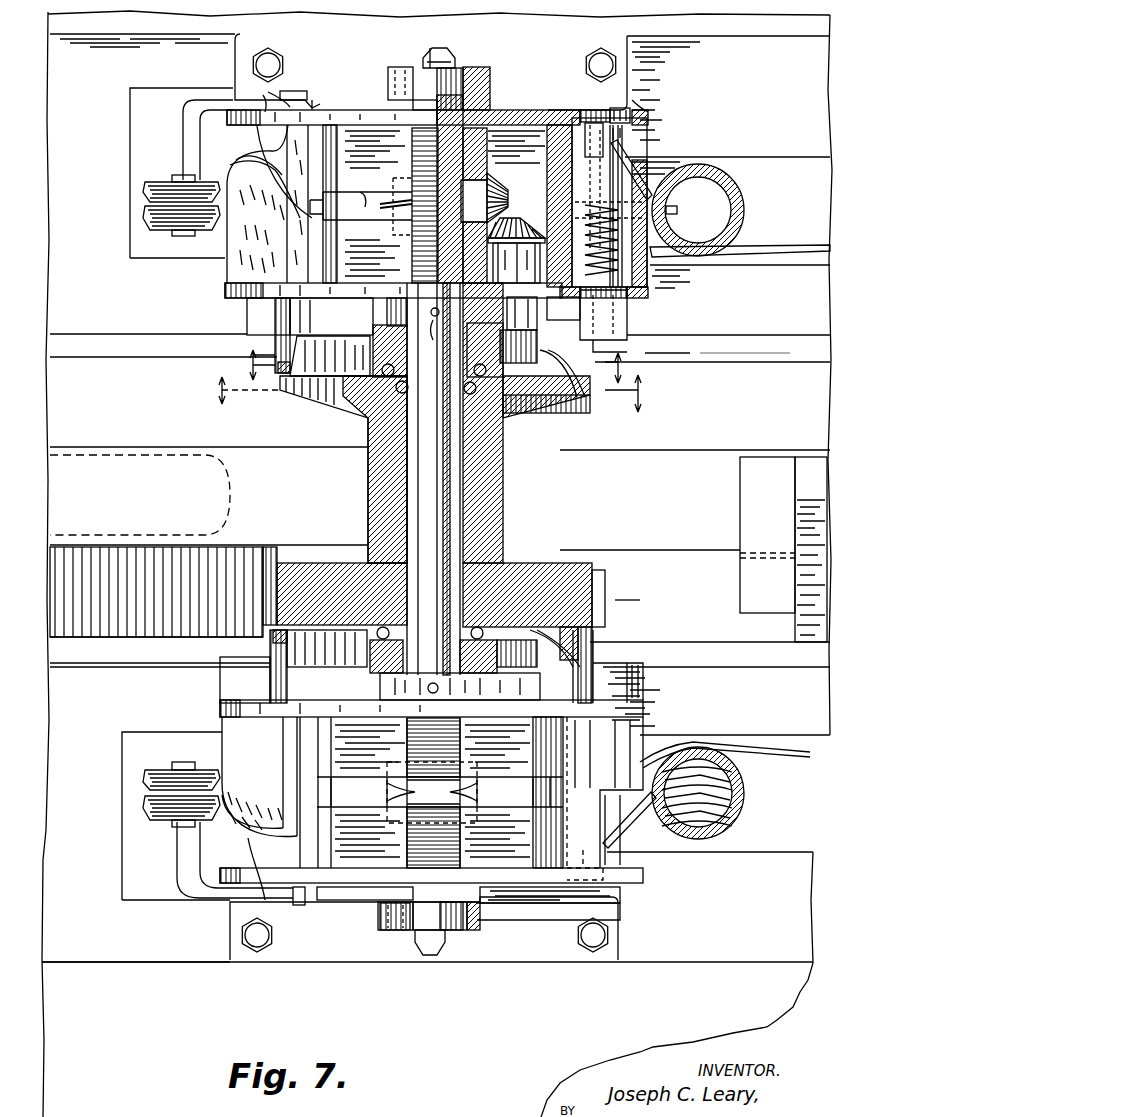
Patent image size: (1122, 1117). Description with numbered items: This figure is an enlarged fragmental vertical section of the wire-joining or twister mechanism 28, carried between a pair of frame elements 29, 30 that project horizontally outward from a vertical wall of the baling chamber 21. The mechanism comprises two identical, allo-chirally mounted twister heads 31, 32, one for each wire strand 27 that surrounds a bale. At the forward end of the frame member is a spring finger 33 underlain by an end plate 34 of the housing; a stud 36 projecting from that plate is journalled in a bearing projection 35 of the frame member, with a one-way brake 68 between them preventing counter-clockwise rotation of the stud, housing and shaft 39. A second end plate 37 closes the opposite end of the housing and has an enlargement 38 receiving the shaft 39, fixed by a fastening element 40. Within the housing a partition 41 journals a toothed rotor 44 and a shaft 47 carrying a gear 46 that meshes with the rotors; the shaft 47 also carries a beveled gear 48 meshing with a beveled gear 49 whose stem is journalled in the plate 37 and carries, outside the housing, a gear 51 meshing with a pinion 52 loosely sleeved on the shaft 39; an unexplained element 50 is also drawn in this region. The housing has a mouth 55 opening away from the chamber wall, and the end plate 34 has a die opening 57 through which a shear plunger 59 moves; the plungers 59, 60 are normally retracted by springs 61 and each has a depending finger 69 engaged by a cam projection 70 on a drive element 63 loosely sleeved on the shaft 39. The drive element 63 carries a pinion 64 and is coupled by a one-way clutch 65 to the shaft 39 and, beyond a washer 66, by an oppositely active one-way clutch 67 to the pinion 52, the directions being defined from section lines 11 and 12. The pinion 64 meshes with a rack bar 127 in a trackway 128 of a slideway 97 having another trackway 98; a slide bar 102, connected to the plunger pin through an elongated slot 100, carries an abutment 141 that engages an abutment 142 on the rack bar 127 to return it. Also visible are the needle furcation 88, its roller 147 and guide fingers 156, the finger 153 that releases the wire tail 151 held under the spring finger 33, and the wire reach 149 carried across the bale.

The section line 11 is at (437, 366).
The section line 12 is at (432, 393).
The baling chamber 21 is at (718, 42).
The wire strand 27 is at (672, 206).
The wire-joining mechanism 28 is at (122, 985).
The frame element 29 is at (356, 110).
The frame element 30 is at (538, 910).
The twister head 31 is at (203, 294).
The twister head 32 is at (203, 704).
The spring finger 33 is at (293, 92).
The end plate 34 is at (532, 112).
The bearing projection 35 is at (488, 96).
The stud 36 is at (452, 78).
The second end plate 37 is at (336, 299).
The enlargement 38 is at (387, 314).
The shaft 39 is at (447, 468).
The fastening element 40 is at (433, 479).
The partition 41 is at (487, 146).
The rotor 44 is at (412, 157).
The gear 46 is at (463, 166).
The shaft 47 is at (430, 190).
The beveled gear 48 is at (508, 187).
The beveled gear 49 is at (516, 218).
The block 50 is at (538, 313).
The gear 51 is at (580, 398).
The pinion 52 is at (372, 331).
The slot 55 is at (364, 212).
The die opening 57 is at (632, 122).
The shear plunger 59 is at (609, 202).
The shear plunger 60 is at (247, 316).
The spring 61 is at (648, 284).
The drive element 63 is at (492, 508).
The pinion 64 is at (605, 589).
The one-way clutch 65 is at (366, 421).
The washer 66 is at (372, 392).
The one-way clutch 67 is at (535, 398).
The one-way brake 68 is at (492, 82).
The depending finger 69 is at (214, 182).
The cam projection 70 is at (540, 346).
The furcation 88 is at (745, 206).
The slideway 97 is at (778, 340).
The trackway 98 is at (720, 366).
The elongated slot 100 is at (128, 457).
The slide bar 102 is at (253, 462).
The rack bar 127 is at (262, 563).
The trackway 128 is at (715, 640).
The abutment 141 is at (807, 468).
The abutment 142 is at (763, 470).
The roller 147 is at (150, 226).
The reach 149 is at (228, 226).
The tail 151 is at (266, 93).
The finger 153 is at (313, 103).
The guide fingers 156 is at (162, 181).